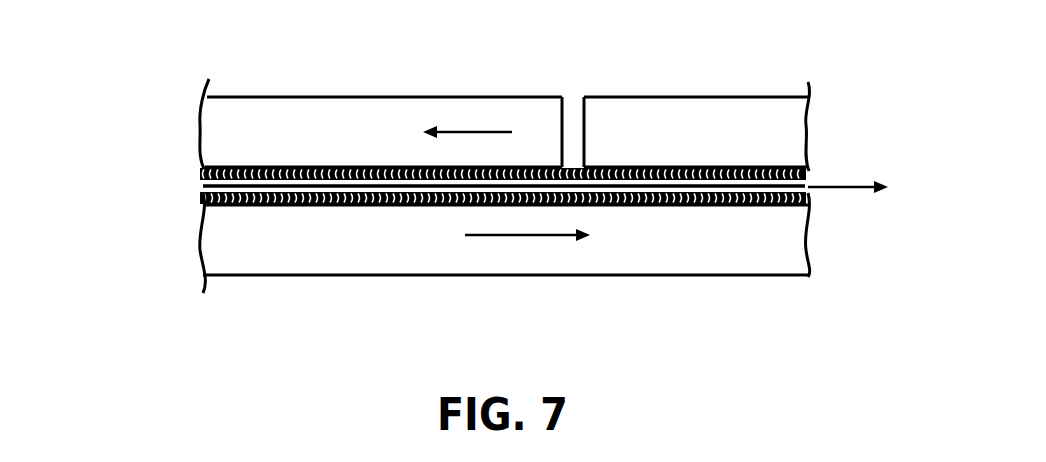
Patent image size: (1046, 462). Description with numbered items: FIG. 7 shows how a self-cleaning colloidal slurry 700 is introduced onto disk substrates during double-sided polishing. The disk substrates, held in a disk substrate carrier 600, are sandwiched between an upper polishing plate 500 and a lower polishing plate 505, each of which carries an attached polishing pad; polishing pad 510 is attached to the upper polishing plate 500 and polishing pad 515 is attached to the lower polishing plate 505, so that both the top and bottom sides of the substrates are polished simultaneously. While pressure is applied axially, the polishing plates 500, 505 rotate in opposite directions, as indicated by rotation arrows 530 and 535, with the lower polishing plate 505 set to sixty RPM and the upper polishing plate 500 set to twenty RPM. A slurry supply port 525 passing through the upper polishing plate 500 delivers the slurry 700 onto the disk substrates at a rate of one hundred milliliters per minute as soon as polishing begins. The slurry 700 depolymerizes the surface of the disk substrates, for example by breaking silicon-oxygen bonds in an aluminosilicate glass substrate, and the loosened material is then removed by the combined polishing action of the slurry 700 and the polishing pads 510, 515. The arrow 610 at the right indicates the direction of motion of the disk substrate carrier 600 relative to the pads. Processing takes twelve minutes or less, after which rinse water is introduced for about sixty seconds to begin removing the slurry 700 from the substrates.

The upper polishing plate 500 is at (307, 113).
The lower polishing plate 505 is at (312, 252).
The polishing pad 510 is at (810, 171).
The polishing pad 515 is at (810, 195).
The slurry supply port 525 is at (568, 113).
The rotation arrow 530 is at (467, 145).
The rotation arrow 535 is at (527, 250).
The disk substrate carrier 600 is at (193, 183).
The disk and carrier motion direction 610 is at (872, 190).
The self-cleaning colloidal slurry 700 is at (576, 92).